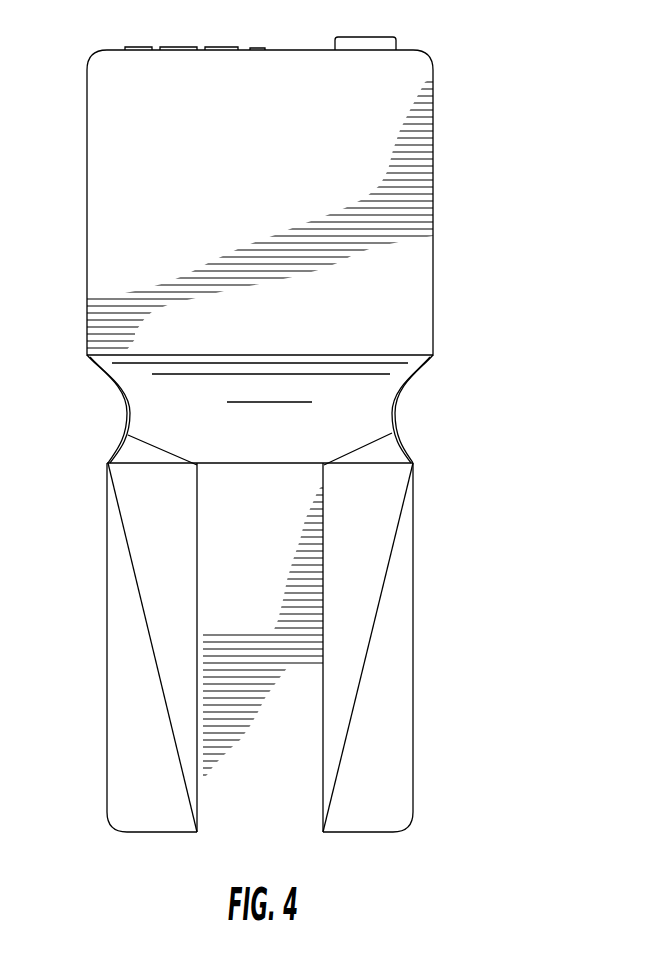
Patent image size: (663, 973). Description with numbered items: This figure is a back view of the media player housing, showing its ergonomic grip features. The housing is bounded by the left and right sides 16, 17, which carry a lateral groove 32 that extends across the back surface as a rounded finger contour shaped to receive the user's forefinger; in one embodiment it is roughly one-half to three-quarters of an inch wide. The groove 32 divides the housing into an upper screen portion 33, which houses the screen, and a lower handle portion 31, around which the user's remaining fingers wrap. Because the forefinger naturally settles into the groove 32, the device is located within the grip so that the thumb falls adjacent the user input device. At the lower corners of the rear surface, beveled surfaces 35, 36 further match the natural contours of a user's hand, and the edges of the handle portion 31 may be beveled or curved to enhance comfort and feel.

The left side 16 is at (407, 580).
The right side 17 is at (107, 572).
The handle portion 31 is at (220, 663).
The lateral groove 32 is at (440, 400).
The screen portion 33 is at (87, 173).
The beveled surface 35 is at (123, 787).
The beveled surface 36 is at (398, 790).